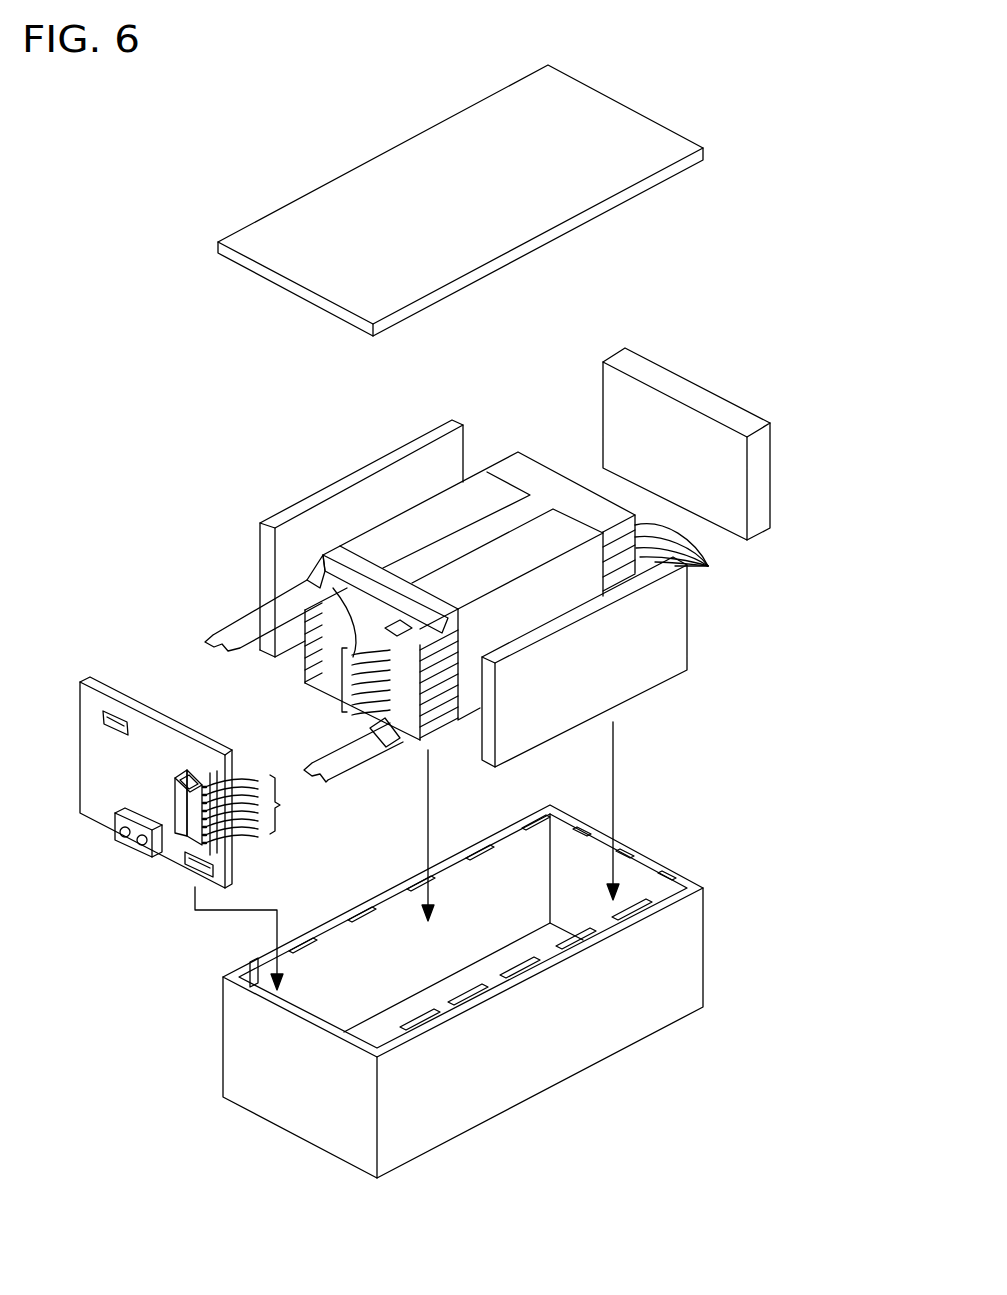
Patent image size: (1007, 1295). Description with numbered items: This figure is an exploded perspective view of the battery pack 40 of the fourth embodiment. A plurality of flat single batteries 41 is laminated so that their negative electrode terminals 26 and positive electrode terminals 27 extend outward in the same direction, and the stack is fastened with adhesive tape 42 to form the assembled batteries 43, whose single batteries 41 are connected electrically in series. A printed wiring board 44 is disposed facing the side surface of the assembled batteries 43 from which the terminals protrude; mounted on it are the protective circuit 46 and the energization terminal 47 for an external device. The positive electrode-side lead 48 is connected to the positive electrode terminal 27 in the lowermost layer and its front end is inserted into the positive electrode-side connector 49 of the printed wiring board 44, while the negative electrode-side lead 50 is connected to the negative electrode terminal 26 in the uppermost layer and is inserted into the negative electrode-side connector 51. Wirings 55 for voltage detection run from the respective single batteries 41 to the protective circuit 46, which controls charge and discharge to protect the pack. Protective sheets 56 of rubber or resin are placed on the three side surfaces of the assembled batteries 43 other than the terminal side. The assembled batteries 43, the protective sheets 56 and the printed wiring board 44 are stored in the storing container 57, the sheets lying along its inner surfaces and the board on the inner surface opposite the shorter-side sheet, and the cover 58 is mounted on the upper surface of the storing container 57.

The battery pack 40 is at (148, 345).
The cover 58 is at (647, 140).
The protective sheet 56 is at (330, 494).
The assembled batteries 43 is at (417, 508).
The adhesive tape 42 is at (542, 525).
The single battery 41 is at (717, 551).
The negative electrode terminal 26 is at (312, 576).
The positive electrode terminal 27 is at (393, 625).
The negative electrode-side lead 50 is at (233, 623).
The positive electrode-side lead 48 is at (350, 762).
The wirings for voltage detection 55 is at (342, 677).
The printed wiring board 44 is at (113, 682).
The negative electrode-side connector 51 is at (122, 723).
The protective circuit 46 is at (188, 775).
The energization terminal for an external device 47 is at (130, 843).
The positive electrode-side connector 49 is at (232, 867).
The storing container 57 is at (690, 953).